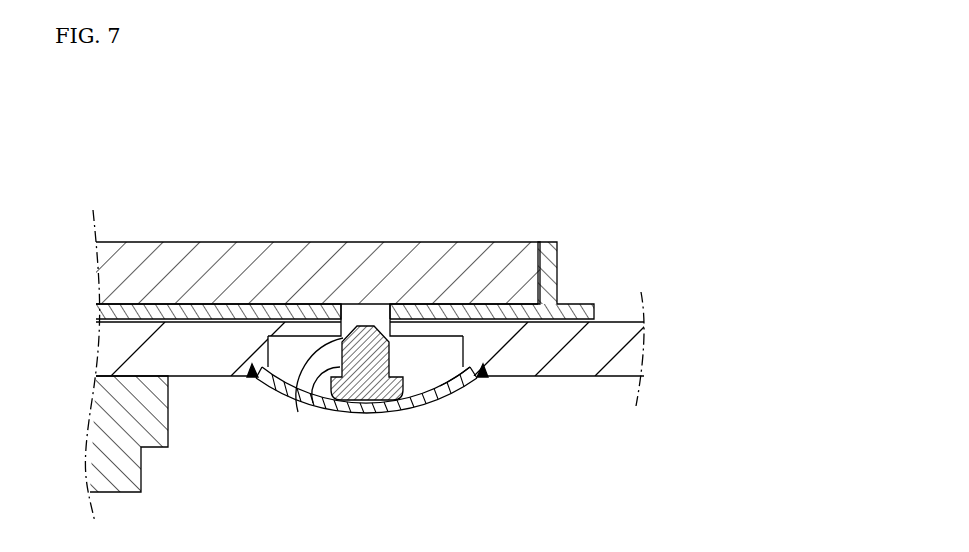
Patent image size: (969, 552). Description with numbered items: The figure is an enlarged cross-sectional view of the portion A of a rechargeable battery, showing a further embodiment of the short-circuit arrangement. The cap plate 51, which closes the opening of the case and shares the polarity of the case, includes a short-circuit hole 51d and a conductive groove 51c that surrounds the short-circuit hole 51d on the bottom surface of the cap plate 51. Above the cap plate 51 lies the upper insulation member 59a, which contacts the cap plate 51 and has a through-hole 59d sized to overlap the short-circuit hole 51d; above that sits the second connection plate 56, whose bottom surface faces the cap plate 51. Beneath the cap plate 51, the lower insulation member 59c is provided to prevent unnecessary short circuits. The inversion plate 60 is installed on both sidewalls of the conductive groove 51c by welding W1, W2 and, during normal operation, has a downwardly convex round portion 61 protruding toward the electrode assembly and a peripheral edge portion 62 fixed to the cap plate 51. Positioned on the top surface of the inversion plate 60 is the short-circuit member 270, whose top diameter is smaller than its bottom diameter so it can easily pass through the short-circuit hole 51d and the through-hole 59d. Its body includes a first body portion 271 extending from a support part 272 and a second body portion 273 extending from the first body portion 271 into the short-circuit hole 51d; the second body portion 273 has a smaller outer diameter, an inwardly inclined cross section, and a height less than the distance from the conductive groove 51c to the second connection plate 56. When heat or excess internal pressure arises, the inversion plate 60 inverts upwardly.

The second connection plate 56 is at (153, 248).
The upper insulation member 59a is at (548, 239).
The through-hole 59d is at (402, 311).
The lower insulation member 59c is at (168, 428).
The cap plate 51 is at (372, 317).
The conductive groove 51c is at (267, 353).
The short-circuit hole 51d is at (341, 334).
The welding W1 is at (251, 381).
The welding W2 is at (482, 381).
The inversion plate 60 is at (371, 437).
The round portion 61 is at (399, 410).
The peripheral edge portion 62 is at (475, 372).
The short-circuit member 270 is at (318, 422).
The first body portion 271 is at (329, 378).
The support part 272 is at (338, 387).
The second body portion 273 is at (292, 370).
The portion A is at (498, 193).